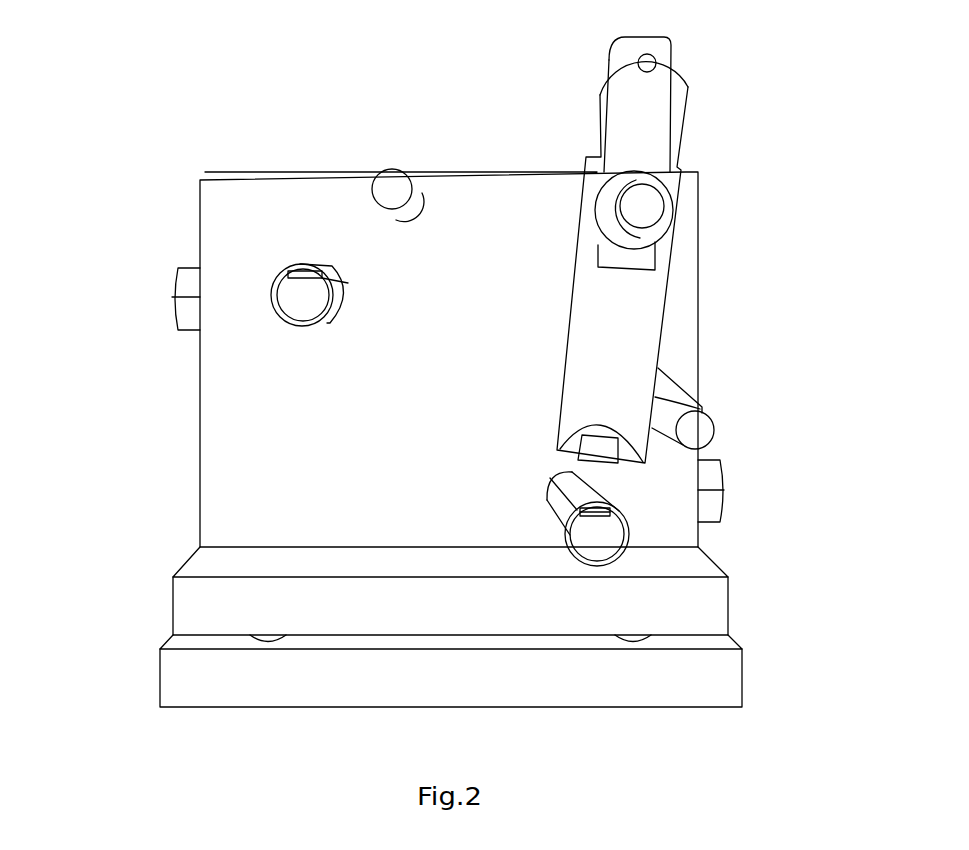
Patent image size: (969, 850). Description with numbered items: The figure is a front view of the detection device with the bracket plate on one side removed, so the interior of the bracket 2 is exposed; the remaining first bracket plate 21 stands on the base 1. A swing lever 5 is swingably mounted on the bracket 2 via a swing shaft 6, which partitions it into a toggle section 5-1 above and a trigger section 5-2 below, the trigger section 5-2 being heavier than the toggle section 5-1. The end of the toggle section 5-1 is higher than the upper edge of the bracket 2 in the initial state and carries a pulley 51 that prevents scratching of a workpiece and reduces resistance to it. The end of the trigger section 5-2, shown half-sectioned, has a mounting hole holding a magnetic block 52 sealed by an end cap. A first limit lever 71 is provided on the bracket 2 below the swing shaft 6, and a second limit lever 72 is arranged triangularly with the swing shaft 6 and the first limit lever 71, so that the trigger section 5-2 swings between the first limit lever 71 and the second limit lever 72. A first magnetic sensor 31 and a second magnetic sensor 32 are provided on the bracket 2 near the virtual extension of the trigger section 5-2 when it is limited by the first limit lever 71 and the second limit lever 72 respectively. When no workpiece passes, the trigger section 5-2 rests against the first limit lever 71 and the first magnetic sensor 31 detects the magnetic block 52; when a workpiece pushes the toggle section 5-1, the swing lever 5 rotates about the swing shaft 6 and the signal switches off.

The base 1 is at (208, 602).
The bracket 2 is at (408, 300).
The first bracket plate 21 is at (297, 205).
The first magnetic sensor 31 is at (590, 537).
The second magnetic sensor 32 is at (295, 300).
The swing lever 5 is at (663, 255).
The toggle section 5-1 is at (630, 108).
The trigger section 5-2 is at (632, 337).
The pulley 51 is at (658, 32).
The magnetic block 52 is at (600, 452).
The swing shaft 6 is at (650, 208).
The first limit lever 71 is at (693, 425).
The second limit lever 72 is at (392, 183).